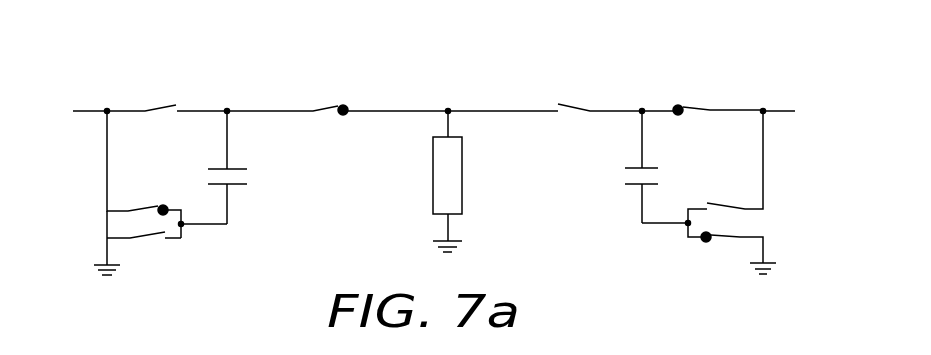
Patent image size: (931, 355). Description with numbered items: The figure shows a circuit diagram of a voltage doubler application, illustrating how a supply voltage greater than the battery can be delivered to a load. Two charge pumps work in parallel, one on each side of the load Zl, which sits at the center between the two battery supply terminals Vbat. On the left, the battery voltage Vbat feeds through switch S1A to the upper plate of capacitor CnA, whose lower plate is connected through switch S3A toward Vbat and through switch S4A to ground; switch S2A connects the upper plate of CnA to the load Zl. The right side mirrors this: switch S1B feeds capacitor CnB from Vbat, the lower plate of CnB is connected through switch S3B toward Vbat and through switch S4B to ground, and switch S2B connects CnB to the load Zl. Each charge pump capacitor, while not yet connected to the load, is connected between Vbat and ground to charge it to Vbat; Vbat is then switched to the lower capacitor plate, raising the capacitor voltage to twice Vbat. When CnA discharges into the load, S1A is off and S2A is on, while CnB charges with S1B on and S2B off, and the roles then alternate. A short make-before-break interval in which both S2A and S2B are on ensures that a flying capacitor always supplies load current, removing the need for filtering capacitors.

The battery voltage Vbat is at (436, 109).
The switch S1A is at (168, 98).
The switch S2A is at (339, 99).
The switch S3A is at (167, 174).
The switch S4A is at (137, 243).
The capacitor CnA is at (247, 167).
The load Zl is at (460, 181).
The switch S1B is at (702, 99).
The switch S2B is at (546, 98).
The switch S3B is at (702, 168).
The switch S4B is at (732, 248).
The capacitor CnB is at (622, 167).